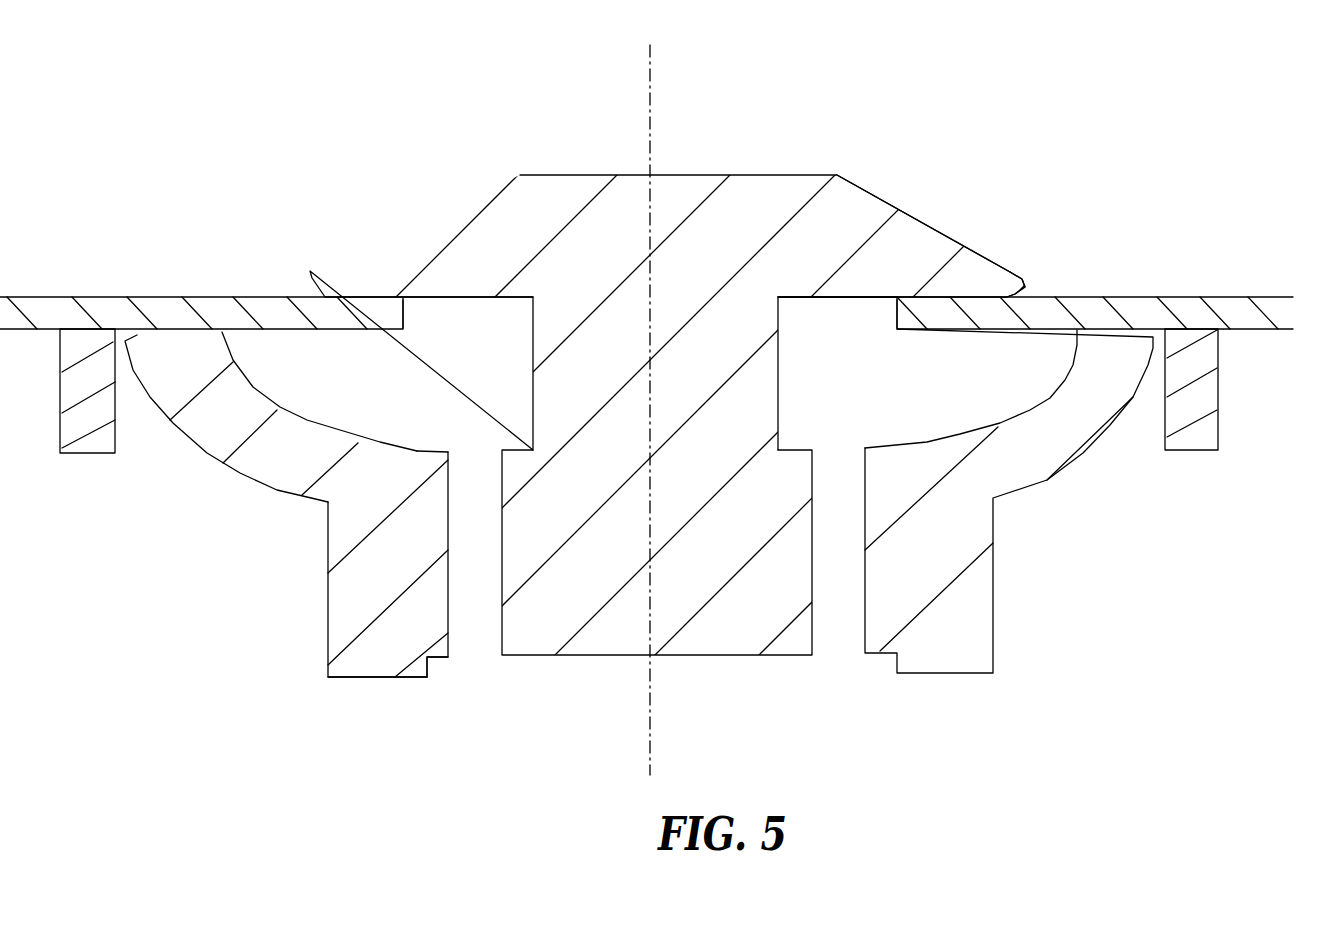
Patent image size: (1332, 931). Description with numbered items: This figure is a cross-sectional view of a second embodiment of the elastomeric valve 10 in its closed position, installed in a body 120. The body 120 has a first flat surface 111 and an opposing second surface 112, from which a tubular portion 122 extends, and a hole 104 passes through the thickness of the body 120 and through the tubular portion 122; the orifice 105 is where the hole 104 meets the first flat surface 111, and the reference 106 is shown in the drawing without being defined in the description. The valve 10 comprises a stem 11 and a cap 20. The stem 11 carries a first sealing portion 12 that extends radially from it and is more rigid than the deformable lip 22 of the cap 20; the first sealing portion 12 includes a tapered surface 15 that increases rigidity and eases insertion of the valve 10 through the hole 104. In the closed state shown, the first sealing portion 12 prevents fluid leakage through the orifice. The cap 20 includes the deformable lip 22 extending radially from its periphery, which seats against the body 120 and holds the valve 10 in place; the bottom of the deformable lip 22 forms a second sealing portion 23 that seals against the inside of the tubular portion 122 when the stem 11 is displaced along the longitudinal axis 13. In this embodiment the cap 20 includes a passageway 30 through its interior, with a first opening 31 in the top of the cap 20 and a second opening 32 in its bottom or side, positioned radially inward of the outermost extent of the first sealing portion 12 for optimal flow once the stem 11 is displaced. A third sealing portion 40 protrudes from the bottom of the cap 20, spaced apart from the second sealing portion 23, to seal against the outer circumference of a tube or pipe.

The valve 10 is at (933, 152).
The stem 11 is at (626, 363).
The first sealing portion 12 is at (957, 237).
The longitudinal axis 13 is at (650, 727).
The tapered surface 15 is at (1005, 280).
The cap 20 is at (768, 613).
The deformable lip 22 is at (1062, 483).
The second sealing portion 23 is at (160, 451).
The passageway 30 is at (486, 571).
The first opening 31 is at (486, 461).
The second opening 32 is at (458, 660).
The third sealing portion 40 is at (433, 670).
The hole 104 is at (840, 344).
The orifice 105 is at (407, 303).
The right opening edge 106 is at (887, 332).
The first flat surface 111 is at (220, 331).
The second surface 112 is at (1237, 332).
The body 120 is at (107, 317).
The tubular portion 122 is at (88, 455).